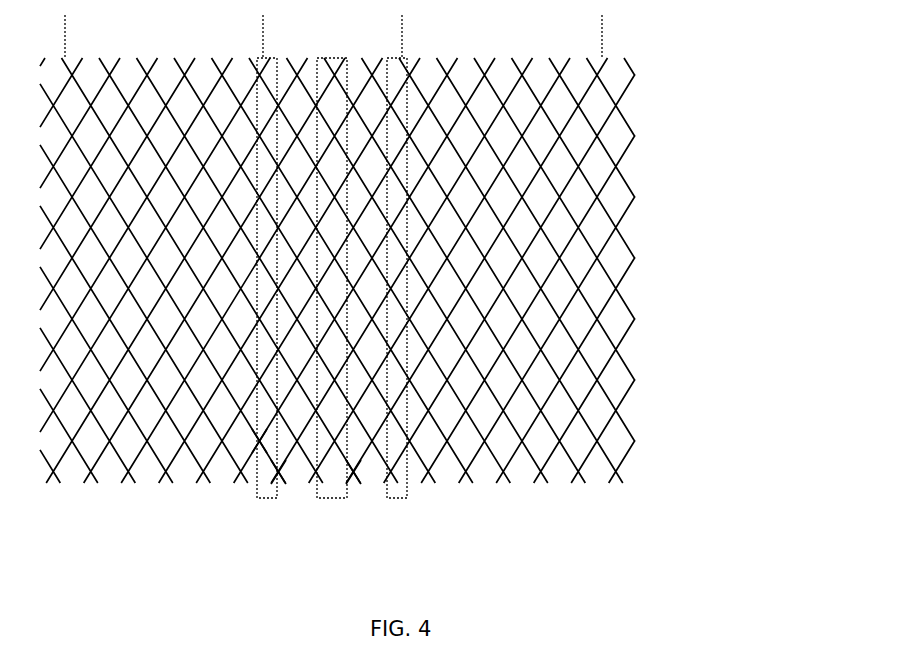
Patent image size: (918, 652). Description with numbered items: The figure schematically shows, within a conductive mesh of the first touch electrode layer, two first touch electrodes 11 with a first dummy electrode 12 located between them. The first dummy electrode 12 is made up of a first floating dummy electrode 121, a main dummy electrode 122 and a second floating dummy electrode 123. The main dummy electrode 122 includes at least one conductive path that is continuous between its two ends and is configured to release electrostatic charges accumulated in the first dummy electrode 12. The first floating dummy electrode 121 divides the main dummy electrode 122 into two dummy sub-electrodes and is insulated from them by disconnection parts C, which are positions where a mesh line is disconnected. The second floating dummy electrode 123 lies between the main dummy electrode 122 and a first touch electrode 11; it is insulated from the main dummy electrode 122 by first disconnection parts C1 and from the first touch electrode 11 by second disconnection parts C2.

The first touch electrode 11 is at (65, 38).
The first dummy electrode 12 is at (402, 38).
The first floating dummy electrode 121 is at (334, 478).
The main dummy electrode 122 is at (297, 473).
The second floating dummy electrode 123 is at (388, 527).
The disconnection part C is at (350, 463).
The first disconnection part C1 is at (268, 452).
The second disconnection part C2 is at (283, 462).